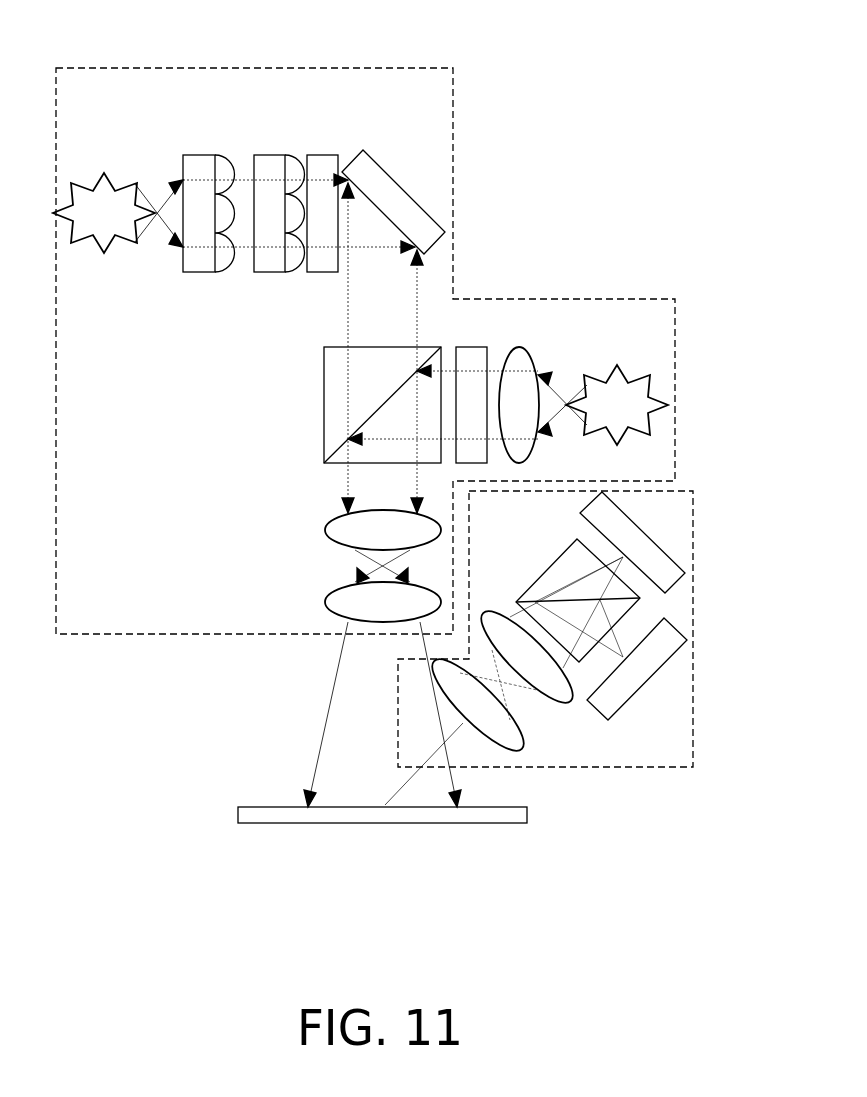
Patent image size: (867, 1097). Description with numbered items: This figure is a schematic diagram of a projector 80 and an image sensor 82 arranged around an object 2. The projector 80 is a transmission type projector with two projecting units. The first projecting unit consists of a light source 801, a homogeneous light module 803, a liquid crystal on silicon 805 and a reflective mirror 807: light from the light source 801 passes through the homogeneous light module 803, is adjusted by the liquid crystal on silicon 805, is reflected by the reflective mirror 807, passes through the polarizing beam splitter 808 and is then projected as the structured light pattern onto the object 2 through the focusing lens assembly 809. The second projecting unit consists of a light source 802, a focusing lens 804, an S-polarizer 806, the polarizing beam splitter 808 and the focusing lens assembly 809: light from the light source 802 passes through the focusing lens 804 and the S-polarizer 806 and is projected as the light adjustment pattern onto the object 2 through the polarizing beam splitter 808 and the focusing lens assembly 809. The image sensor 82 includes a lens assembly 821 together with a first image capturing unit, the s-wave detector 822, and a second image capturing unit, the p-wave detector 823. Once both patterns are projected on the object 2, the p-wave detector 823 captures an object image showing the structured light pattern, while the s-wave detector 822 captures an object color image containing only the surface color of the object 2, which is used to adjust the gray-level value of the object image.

The projector 80 is at (86, 68).
The image sensor 82 is at (700, 509).
The light source 801 is at (107, 172).
The light source 802 is at (628, 370).
The homogeneous light module 803 is at (300, 150).
The focusing lens 804 is at (535, 360).
The liquid crystal on silicon 805 is at (322, 153).
The S-polarizer 806 is at (472, 347).
The reflective mirror 807 is at (378, 160).
The polarizing beam splitter 808 is at (324, 366).
The focusing lens assembly 809 is at (325, 597).
The lens assembly 821 is at (525, 748).
The s-wave detector 822 is at (633, 712).
The p-wave detector 823 is at (580, 505).
The object 2 is at (497, 823).